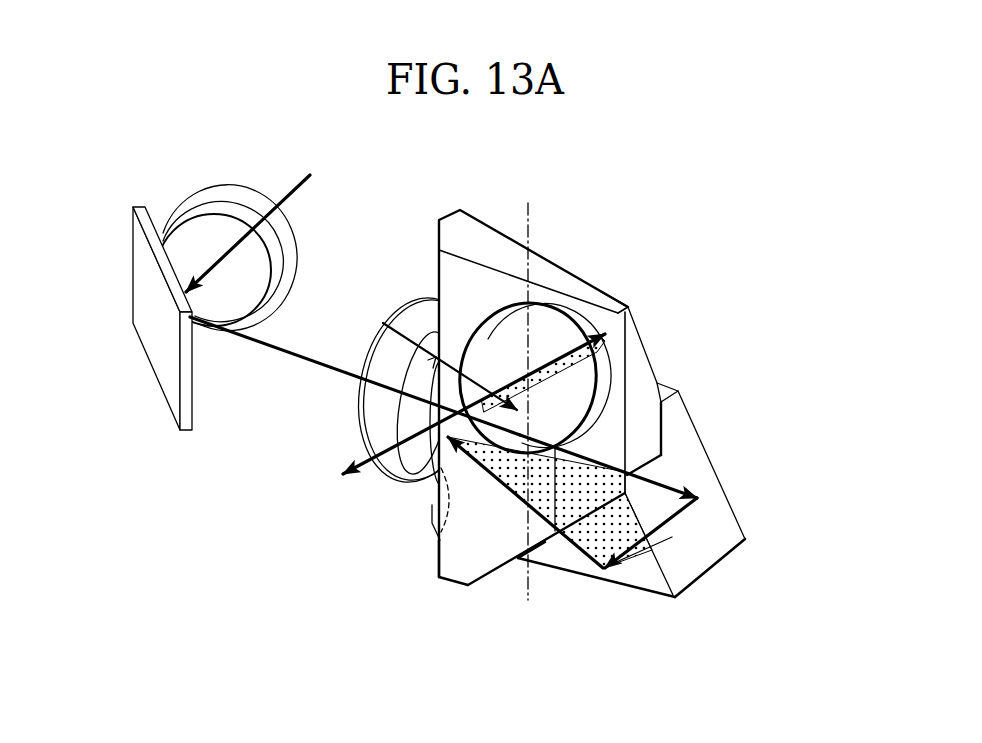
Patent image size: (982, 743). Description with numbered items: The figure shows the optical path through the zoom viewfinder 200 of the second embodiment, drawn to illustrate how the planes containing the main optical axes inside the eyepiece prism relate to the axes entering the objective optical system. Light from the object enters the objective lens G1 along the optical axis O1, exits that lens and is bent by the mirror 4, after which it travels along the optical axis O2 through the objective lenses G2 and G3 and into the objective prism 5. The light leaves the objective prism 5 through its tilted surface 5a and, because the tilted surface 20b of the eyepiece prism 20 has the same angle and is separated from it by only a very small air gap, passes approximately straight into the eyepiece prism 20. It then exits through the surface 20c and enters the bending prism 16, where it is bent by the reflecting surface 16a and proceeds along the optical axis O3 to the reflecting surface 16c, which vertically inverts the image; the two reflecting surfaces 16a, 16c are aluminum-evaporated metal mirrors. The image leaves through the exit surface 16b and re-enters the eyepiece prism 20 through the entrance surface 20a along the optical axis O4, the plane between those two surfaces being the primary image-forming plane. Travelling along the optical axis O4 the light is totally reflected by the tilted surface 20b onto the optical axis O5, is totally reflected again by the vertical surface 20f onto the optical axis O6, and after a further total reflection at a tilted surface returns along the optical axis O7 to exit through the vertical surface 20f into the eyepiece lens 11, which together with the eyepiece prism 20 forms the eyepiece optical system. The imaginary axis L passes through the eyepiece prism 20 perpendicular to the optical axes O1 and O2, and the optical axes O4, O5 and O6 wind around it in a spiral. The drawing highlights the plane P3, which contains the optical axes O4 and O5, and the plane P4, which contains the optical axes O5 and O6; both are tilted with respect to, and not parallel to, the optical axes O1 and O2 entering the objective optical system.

The viewfinder 200 is at (164, 136).
The mirror 4 is at (157, 342).
The objective lens G1 is at (277, 244).
The objective lens G2 is at (360, 420).
The objective lens G3 is at (402, 475).
The objective prism 5 is at (428, 508).
The tilted surface 5a is at (428, 527).
The eyepiece prism 20 is at (557, 267).
The entrance surface 20a is at (475, 590).
The tilted surface 20b is at (438, 566).
The surface 20c is at (566, 500).
The vertical surface 20f is at (607, 300).
The eyepiece lens 11 is at (600, 353).
The bending prism 16 is at (662, 575).
The reflecting surface 16a is at (670, 520).
The exit surface 16b is at (523, 560).
The reflecting surface 16c is at (630, 580).
The axis L is at (535, 218).
The plane P3 is at (560, 502).
The plane P4 is at (517, 377).
The optical axis O1 is at (292, 188).
The optical axis O2 is at (252, 342).
The optical axis O3 is at (733, 555).
The optical axis O4 is at (556, 550).
The optical axis O5 is at (527, 430).
The optical axis O6 is at (595, 357).
The optical axis O7 is at (383, 323).